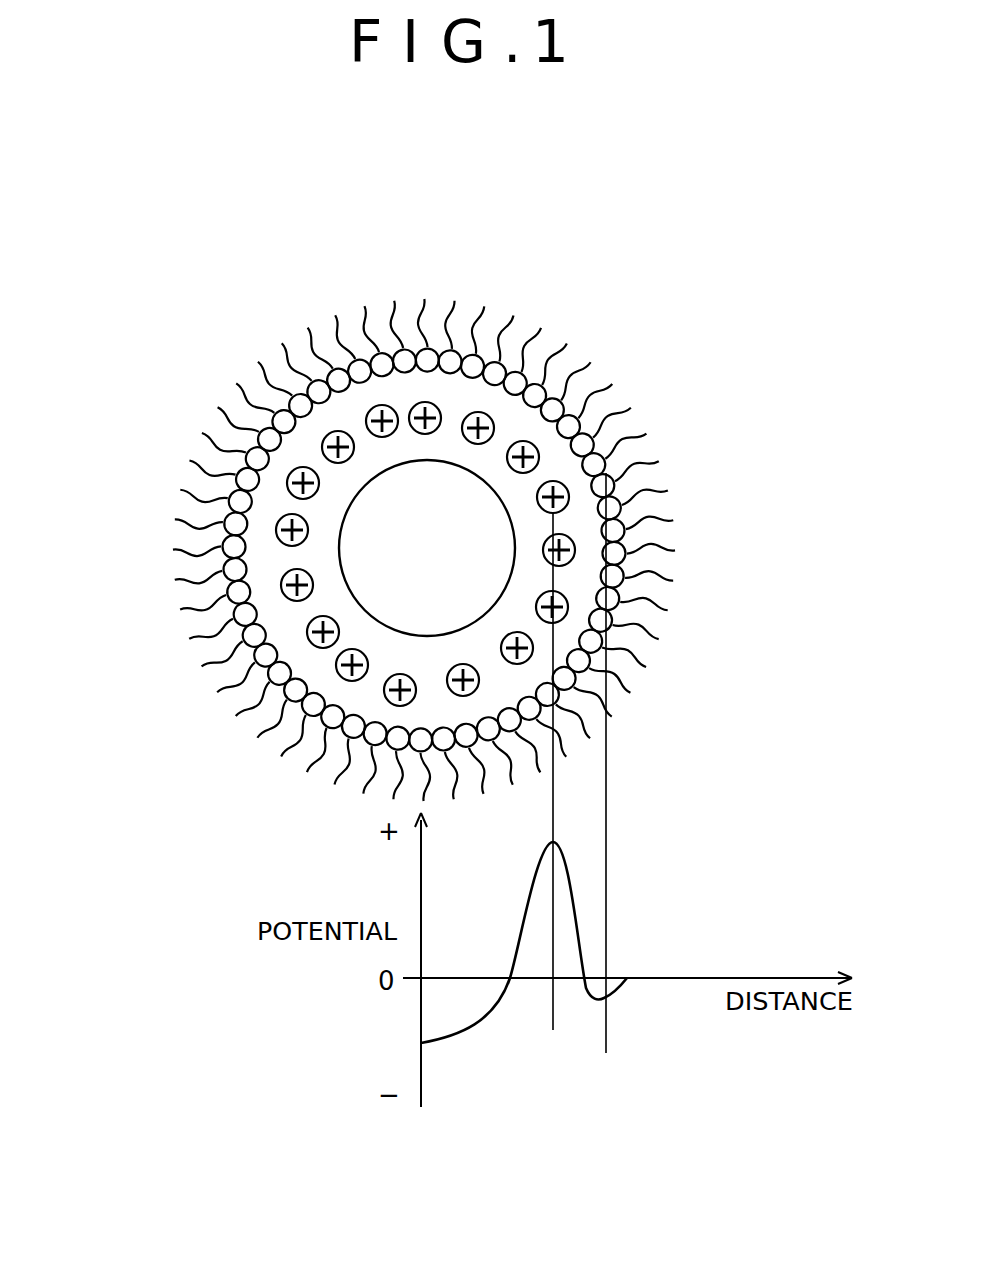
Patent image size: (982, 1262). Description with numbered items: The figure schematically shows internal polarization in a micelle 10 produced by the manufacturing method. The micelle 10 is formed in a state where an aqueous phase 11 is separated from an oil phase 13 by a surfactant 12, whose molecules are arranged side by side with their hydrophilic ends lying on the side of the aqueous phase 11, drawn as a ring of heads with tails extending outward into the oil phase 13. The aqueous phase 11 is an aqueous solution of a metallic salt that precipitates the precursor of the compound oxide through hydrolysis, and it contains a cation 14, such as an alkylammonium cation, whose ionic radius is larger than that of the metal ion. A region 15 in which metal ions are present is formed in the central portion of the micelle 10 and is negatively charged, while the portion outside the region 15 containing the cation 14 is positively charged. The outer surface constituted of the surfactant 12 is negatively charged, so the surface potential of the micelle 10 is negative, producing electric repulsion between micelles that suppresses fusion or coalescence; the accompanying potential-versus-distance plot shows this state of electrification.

The micelle 10 is at (600, 353).
The aqueous phase 11 is at (390, 387).
The surfactant 12 is at (208, 468).
The oil phase 13 is at (808, 404).
The cation 14 is at (527, 437).
The region in which metal ions are present 15 is at (387, 632).